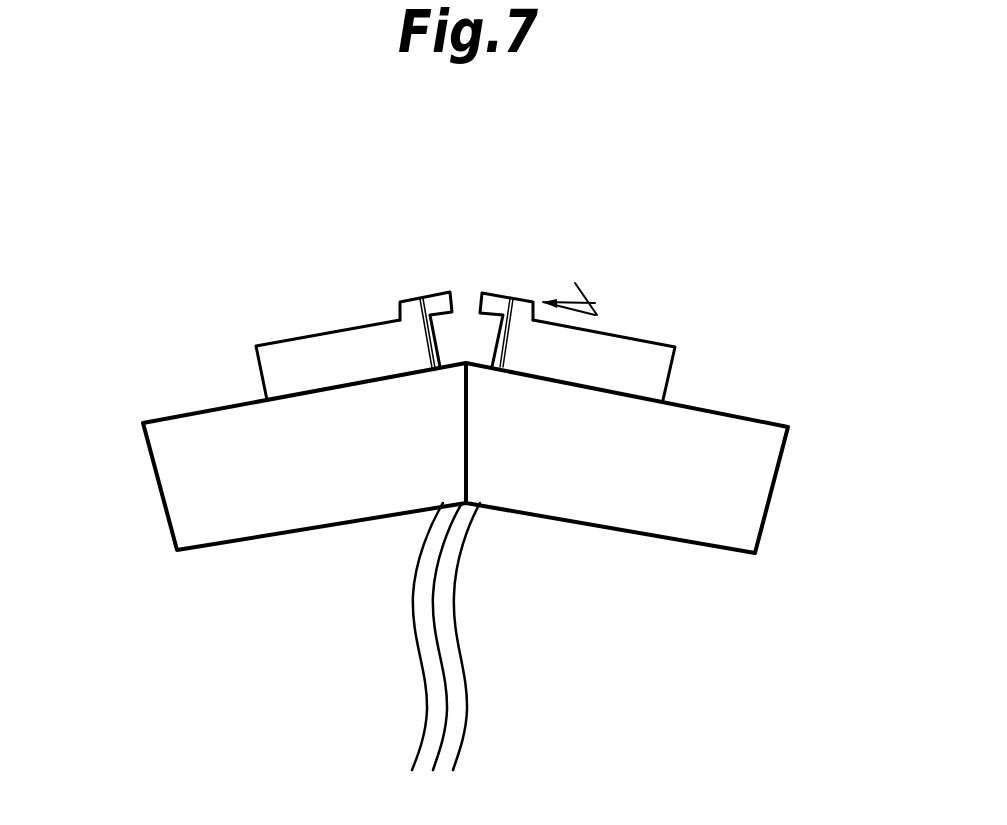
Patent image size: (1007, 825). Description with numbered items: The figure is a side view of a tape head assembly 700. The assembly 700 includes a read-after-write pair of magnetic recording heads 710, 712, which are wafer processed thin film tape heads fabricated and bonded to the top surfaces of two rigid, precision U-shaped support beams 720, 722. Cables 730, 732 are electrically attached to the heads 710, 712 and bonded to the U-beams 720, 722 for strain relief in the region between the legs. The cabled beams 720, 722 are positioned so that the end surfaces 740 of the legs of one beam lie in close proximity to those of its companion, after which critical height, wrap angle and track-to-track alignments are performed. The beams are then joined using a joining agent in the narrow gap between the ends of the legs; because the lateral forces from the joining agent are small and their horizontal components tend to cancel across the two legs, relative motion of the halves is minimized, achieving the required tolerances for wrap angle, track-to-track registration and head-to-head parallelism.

The tape head assembly 700 is at (300, 126).
The magnetic recording head 710 is at (400, 268).
The magnetic recording head 712 is at (499, 266).
The U-shaped support beam 720 is at (208, 487).
The U-shaped support beam 722 is at (740, 490).
The cable 730 is at (418, 645).
The cable 732 is at (452, 613).
The end surfaces of the legs 740 is at (468, 427).